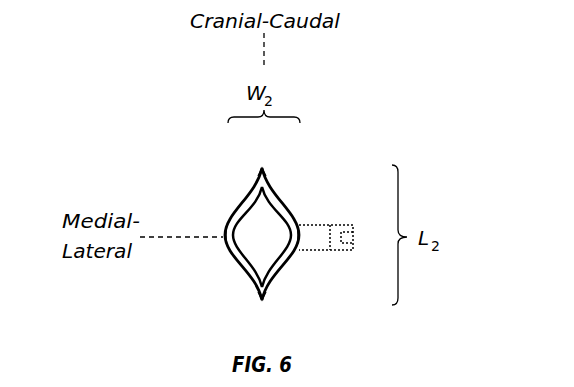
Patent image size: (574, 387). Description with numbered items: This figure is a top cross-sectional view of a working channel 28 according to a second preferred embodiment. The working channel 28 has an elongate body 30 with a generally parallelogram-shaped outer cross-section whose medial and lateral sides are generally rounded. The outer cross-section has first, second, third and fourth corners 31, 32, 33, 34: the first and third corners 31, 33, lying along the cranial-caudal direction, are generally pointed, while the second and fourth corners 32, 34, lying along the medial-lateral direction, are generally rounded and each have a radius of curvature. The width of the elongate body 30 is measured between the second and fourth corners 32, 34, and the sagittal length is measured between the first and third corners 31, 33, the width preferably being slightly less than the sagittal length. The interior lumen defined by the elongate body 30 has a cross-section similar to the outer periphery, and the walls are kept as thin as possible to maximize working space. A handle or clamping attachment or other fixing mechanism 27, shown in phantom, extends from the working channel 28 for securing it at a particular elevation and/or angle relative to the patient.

The fixing mechanism 27 is at (335, 250).
The working channel 28 is at (206, 186).
The elongate body 30 is at (242, 270).
The first corner 31 is at (262, 300).
The second corner 32 is at (225, 235).
The third corner 33 is at (262, 168).
The fourth corner 34 is at (299, 236).